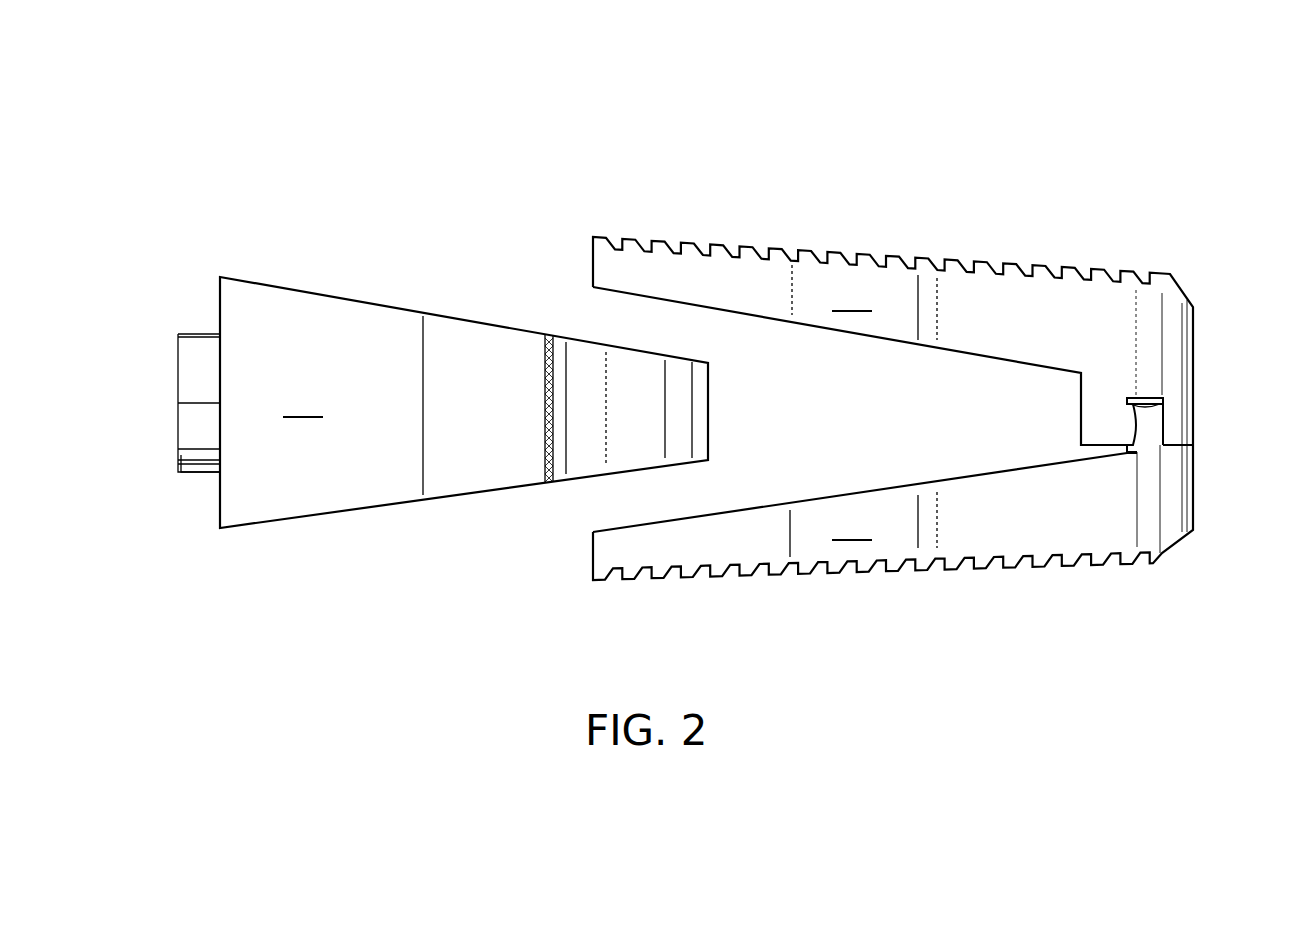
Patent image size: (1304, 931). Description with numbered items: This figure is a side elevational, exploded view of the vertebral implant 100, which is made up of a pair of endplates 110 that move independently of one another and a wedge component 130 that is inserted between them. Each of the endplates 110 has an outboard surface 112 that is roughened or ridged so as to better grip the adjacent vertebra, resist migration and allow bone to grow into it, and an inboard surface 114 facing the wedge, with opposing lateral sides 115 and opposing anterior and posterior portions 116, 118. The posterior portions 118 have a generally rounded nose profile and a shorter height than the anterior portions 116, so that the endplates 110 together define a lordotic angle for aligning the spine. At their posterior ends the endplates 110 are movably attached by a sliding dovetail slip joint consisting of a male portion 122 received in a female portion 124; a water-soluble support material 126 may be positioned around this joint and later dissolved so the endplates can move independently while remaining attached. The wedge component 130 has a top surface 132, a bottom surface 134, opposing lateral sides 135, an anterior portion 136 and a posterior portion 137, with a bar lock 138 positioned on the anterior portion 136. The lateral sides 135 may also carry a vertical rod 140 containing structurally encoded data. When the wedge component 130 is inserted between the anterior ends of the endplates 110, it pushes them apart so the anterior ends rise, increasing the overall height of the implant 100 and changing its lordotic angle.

The vertebral implant 100 is at (600, 135).
The endplates 110 is at (1044, 266).
The outboard surface 112 is at (898, 263).
The inboard surface 114 is at (912, 341).
The lateral sides 115 is at (854, 412).
The anterior portion 116 is at (593, 270).
The posterior portion 118 is at (1195, 372).
The male portion 122 is at (1148, 438).
The female portion 124 is at (1147, 398).
The water-soluble support material 126 is at (1160, 398).
The wedge component 130 is at (317, 292).
The top surface 132 is at (404, 309).
The bottom surface 134 is at (340, 512).
The lateral sides 135 is at (305, 405).
The anterior portion 136 is at (218, 305).
The posterior portion 137 is at (711, 405).
The bar lock 138 is at (181, 470).
The vertical rod 140 is at (548, 480).